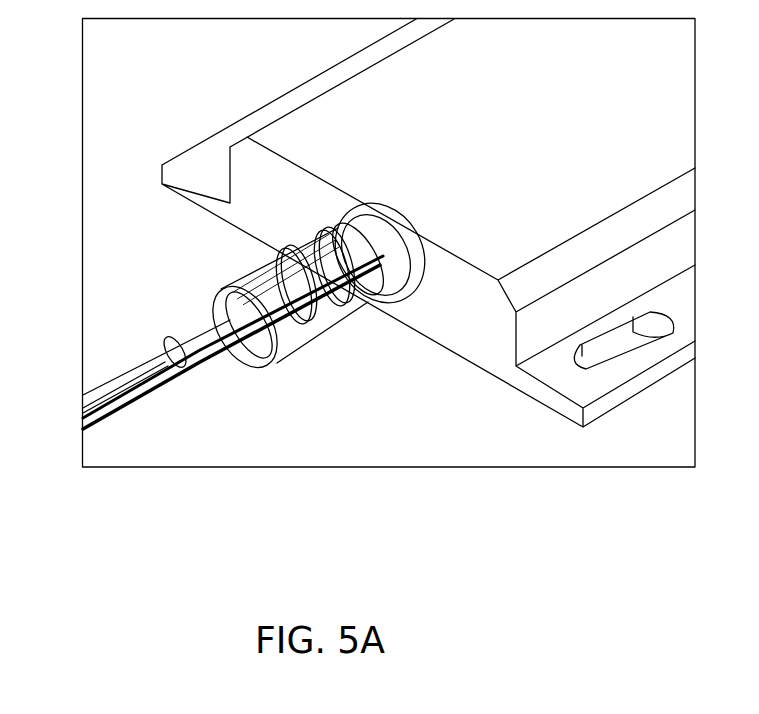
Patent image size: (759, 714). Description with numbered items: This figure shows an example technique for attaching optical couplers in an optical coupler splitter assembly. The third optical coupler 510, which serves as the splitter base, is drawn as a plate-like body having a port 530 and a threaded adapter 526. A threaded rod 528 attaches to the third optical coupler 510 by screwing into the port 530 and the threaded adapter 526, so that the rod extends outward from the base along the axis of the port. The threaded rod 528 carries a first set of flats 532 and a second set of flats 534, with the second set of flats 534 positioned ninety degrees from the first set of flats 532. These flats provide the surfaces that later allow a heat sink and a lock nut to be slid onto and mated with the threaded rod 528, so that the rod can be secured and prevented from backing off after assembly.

The third optical coupler 510 is at (260, 108).
The threaded adapter 526 is at (298, 352).
The threaded rod 528 is at (177, 345).
The port 530 is at (414, 255).
The first set of flats 532 is at (282, 300).
The second set of flats 534 is at (180, 370).